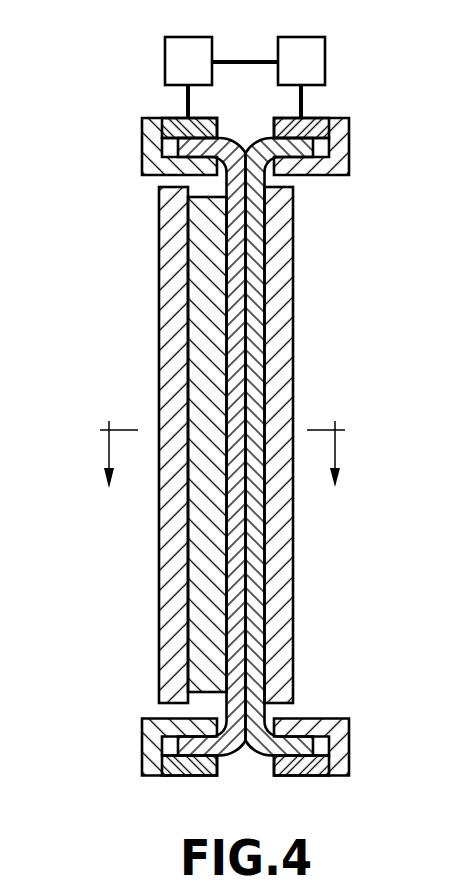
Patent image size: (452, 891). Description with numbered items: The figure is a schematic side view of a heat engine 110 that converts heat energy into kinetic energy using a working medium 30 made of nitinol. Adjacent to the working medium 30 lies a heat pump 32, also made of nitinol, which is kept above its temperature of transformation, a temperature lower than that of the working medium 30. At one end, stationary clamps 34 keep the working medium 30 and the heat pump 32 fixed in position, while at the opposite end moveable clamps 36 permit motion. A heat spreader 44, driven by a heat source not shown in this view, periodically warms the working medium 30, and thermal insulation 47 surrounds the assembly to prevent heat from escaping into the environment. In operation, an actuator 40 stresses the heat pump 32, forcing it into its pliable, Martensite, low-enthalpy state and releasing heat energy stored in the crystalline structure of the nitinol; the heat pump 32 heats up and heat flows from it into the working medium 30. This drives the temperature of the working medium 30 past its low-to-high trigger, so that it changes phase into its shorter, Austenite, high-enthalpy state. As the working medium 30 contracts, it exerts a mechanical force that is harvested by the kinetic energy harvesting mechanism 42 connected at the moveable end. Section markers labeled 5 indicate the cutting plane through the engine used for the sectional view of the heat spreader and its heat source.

The heat engine 110 is at (76, 97).
The kinetic energy harvesting mechanism 42 is at (165, 62).
The actuator 40 is at (325, 62).
The moveable clamps 36 is at (142, 148).
The stationary clamps 34 is at (142, 747).
The working medium 30 is at (236, 137).
The heat pump 32 is at (256, 757).
The thermal insulation 47 is at (159, 331).
The heat spreader 44 is at (205, 532).
The section line 5- 5 is at (222, 438).